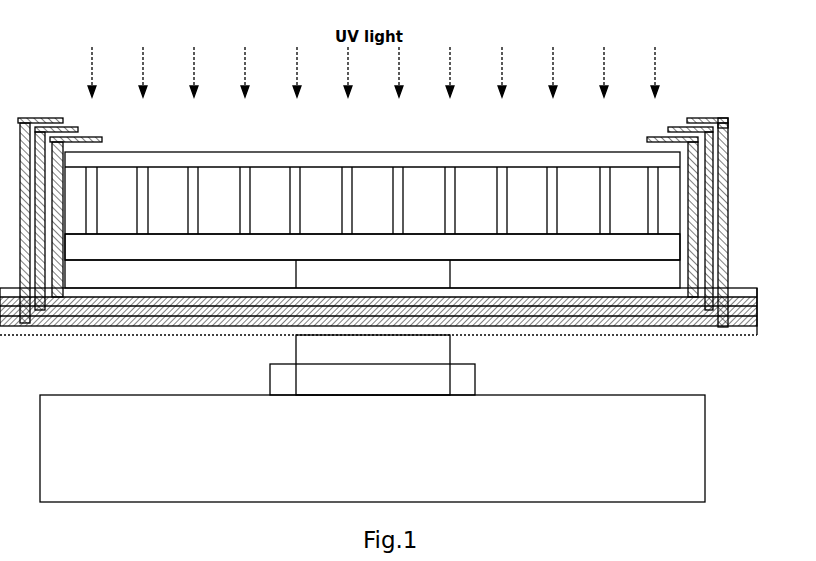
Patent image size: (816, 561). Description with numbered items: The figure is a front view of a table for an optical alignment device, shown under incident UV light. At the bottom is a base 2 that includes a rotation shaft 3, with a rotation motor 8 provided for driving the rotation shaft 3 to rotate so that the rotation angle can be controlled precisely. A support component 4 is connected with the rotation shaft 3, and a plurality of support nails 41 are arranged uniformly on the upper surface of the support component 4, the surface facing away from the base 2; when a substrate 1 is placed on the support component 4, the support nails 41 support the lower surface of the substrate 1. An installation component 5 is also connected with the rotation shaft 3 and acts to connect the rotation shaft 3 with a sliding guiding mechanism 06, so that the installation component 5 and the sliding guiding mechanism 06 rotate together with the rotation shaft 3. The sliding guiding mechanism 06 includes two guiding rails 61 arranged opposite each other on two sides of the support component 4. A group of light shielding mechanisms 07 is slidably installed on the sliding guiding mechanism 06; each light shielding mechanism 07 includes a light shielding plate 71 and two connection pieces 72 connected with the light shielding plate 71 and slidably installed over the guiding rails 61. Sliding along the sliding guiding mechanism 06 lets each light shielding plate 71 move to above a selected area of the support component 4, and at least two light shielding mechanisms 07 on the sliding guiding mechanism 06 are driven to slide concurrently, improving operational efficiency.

The substrate 1 is at (498, 152).
The support nails 41 is at (408, 190).
The support component 4 is at (558, 228).
The guiding rails 61 is at (528, 316).
The installation component 5 is at (735, 288).
The sliding guiding mechanism 06 is at (756, 318).
The light shielding plate 71 is at (76, 137).
The connection pieces 72 is at (722, 180).
The light shielding mechanism 07 is at (732, 114).
The rotation shaft 3 is at (296, 340).
The rotation motor 8 is at (270, 380).
The base 2 is at (578, 395).